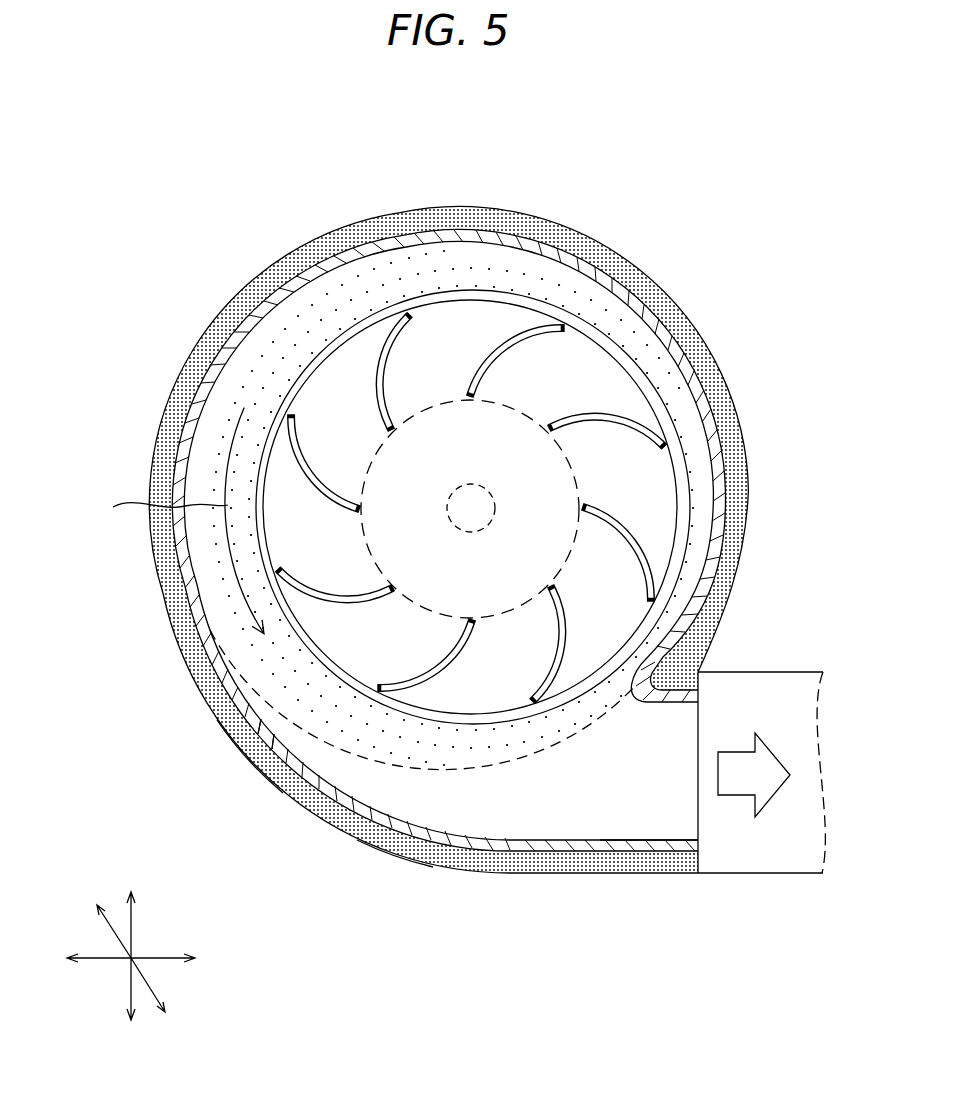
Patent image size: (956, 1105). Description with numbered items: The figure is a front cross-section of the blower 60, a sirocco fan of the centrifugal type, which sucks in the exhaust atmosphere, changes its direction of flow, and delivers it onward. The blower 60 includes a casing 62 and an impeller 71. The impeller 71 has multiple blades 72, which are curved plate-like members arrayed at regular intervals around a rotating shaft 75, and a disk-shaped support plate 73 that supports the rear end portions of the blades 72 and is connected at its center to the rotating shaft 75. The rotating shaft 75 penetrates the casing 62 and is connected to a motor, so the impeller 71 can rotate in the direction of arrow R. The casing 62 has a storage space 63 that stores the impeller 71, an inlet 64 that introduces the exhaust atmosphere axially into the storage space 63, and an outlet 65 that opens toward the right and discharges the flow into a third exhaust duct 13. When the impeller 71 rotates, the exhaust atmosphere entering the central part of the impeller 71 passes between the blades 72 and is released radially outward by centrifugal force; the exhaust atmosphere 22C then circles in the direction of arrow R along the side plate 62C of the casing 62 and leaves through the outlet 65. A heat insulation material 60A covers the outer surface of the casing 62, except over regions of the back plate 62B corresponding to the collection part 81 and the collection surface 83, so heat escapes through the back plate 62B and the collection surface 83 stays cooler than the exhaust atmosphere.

The blower 60 is at (598, 165).
The heat insulation material 60A is at (354, 233).
The casing 62 is at (472, 212).
The back plate 62B is at (389, 840).
The side plate 62C is at (405, 245).
The storage space 63 is at (515, 800).
The inlet 64 is at (413, 600).
The outlet 65 is at (656, 842).
The impeller 71 is at (650, 288).
The blades 72 is at (386, 346).
The support plate 73 is at (670, 310).
The rotating shaft 75 is at (471, 484).
The collection part 81 is at (241, 748).
The collection surface 83 is at (289, 763).
The third exhaust duct 13 is at (786, 672).
The exhaust atmosphere 22C is at (741, 752).